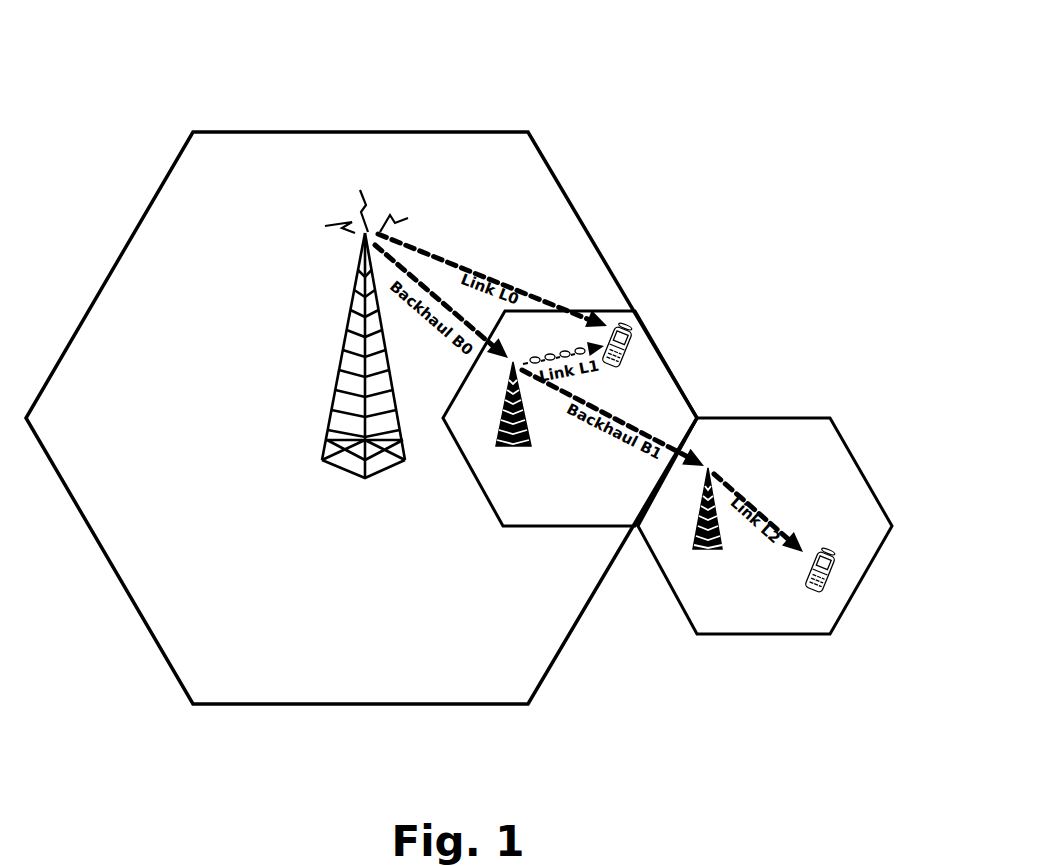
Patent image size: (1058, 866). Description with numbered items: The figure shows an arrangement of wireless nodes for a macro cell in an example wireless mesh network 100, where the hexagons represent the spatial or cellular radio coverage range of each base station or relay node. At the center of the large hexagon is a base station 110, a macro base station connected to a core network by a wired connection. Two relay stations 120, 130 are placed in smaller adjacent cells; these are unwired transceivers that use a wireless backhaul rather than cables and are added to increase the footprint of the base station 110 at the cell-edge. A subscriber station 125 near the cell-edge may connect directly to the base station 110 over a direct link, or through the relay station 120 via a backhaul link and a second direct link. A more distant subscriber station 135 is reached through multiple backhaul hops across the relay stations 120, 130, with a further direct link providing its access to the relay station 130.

The wireless mesh network 100 is at (680, 108).
The base station 110 is at (334, 385).
The relay station 120 is at (503, 427).
The subscriber station 125 is at (637, 343).
The relay station 130 is at (692, 529).
The subscriber station 135 is at (832, 572).